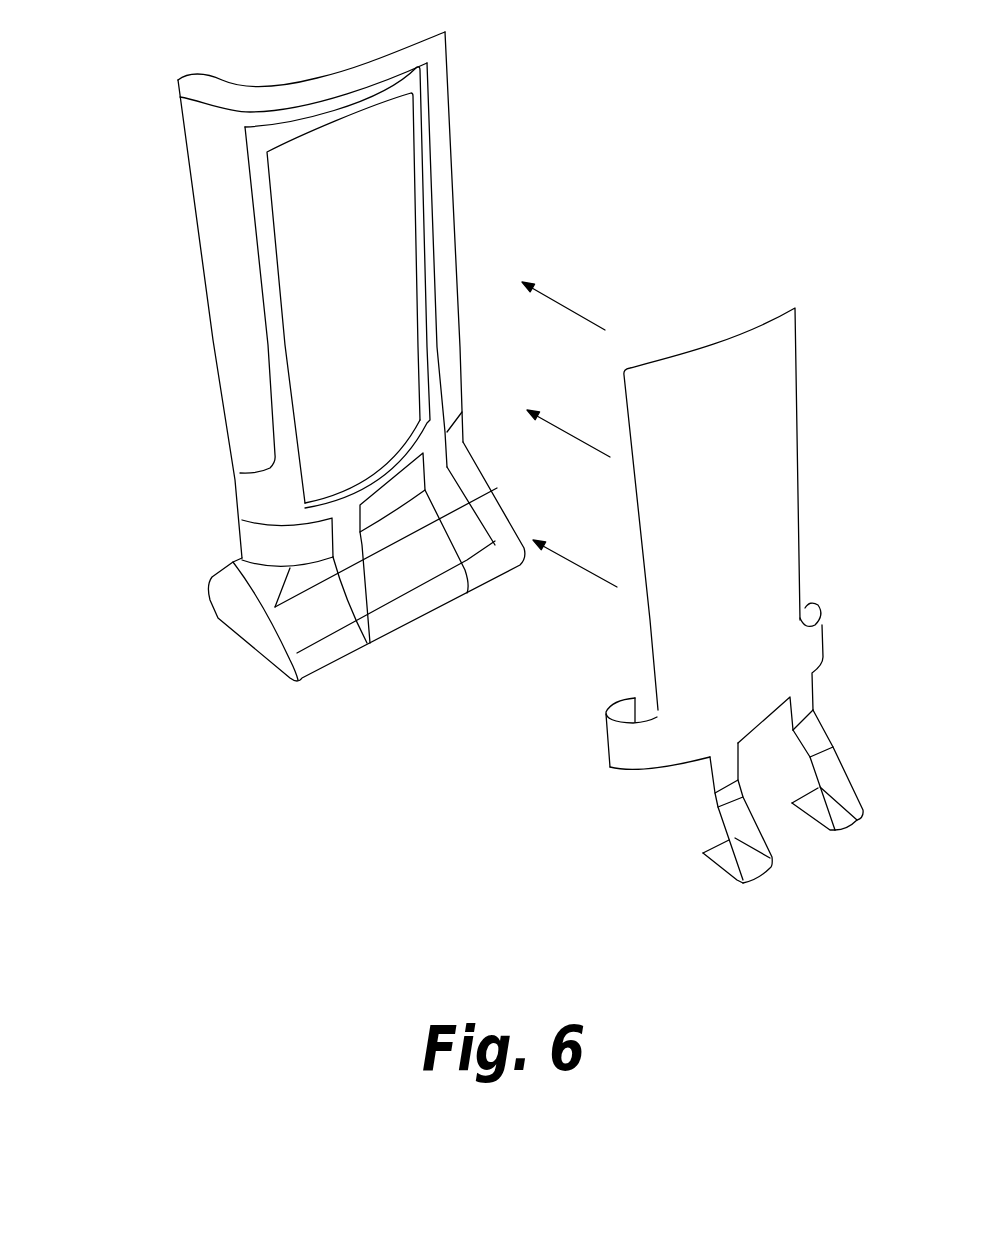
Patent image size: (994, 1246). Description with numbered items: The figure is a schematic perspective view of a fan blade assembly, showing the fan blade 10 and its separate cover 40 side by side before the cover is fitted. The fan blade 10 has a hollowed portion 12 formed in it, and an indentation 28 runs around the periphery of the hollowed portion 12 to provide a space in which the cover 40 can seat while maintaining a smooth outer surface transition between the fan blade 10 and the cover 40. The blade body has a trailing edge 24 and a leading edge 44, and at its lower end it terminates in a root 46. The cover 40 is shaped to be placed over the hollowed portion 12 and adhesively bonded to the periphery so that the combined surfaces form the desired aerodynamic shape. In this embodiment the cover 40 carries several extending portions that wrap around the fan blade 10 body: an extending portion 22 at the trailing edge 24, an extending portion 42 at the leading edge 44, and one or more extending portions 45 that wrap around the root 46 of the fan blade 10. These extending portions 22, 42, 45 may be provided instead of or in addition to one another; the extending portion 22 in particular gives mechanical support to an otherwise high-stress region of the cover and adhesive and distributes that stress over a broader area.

The fan blade 10 is at (183, 130).
The hollowed portion 12 is at (322, 384).
The trailing edge 24 is at (461, 386).
The indentation 28 is at (267, 278).
The leading edge 44 is at (250, 497).
The root 46 is at (242, 640).
The cover 40 is at (797, 408).
The extending portion 42 is at (612, 746).
The extending portion 22 is at (817, 607).
The extending portions 45 is at (757, 877).